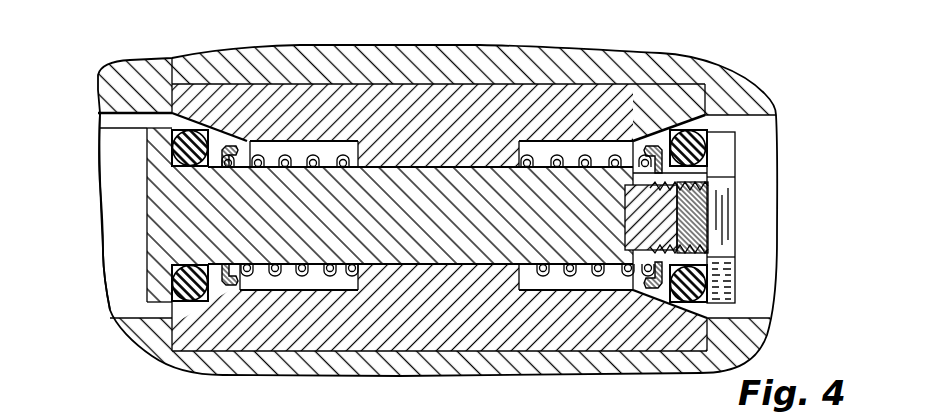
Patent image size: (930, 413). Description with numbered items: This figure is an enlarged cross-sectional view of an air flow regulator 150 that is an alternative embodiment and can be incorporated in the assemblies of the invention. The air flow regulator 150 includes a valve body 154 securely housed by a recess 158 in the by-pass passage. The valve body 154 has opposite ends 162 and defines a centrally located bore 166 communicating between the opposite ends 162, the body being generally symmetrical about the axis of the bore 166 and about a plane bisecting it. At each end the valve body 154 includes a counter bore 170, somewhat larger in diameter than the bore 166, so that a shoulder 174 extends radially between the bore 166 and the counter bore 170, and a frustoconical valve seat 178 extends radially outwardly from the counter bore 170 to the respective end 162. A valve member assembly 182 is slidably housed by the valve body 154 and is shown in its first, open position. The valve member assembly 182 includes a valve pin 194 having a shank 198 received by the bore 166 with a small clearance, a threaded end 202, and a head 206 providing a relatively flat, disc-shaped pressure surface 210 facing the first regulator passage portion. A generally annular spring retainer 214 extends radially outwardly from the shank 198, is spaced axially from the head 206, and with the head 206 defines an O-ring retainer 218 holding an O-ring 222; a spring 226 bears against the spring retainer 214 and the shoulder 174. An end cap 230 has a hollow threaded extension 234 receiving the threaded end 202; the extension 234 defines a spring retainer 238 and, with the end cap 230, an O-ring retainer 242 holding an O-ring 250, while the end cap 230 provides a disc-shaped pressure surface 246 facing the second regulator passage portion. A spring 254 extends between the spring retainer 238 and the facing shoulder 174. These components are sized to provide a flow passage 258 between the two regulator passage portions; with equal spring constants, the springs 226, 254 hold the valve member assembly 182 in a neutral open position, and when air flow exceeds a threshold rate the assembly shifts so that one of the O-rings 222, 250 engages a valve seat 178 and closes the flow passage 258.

The air flow regulator 150 is at (778, 78).
The valve body 154 is at (617, 90).
The recess 158 is at (510, 87).
The opposite ends 162 is at (178, 92).
The bore 166 is at (410, 172).
The counter bore 170 is at (275, 142).
The shoulder 174 is at (328, 141).
The frustoconical valve seat 178 is at (100, 129).
The valve member assembly 182 is at (790, 176).
The valve pin 194 is at (147, 183).
The shank 198 is at (450, 222).
The threaded end 202 is at (633, 184).
The head 206 is at (147, 213).
The pressure surface 210 is at (147, 243).
The spring retainer 214 is at (228, 288).
The O-ring retainer 218 is at (232, 289).
The O-ring 222 is at (178, 301).
The spring 226 is at (303, 277).
The end cap 230 is at (733, 306).
The extension 234 is at (627, 238).
The spring retainer 238 is at (652, 290).
The O-ring retainer 242 is at (706, 262).
The pressure surface 246 is at (735, 228).
The O-ring 250 is at (710, 153).
The spring 254 is at (540, 272).
The flow passage 258 is at (145, 310).